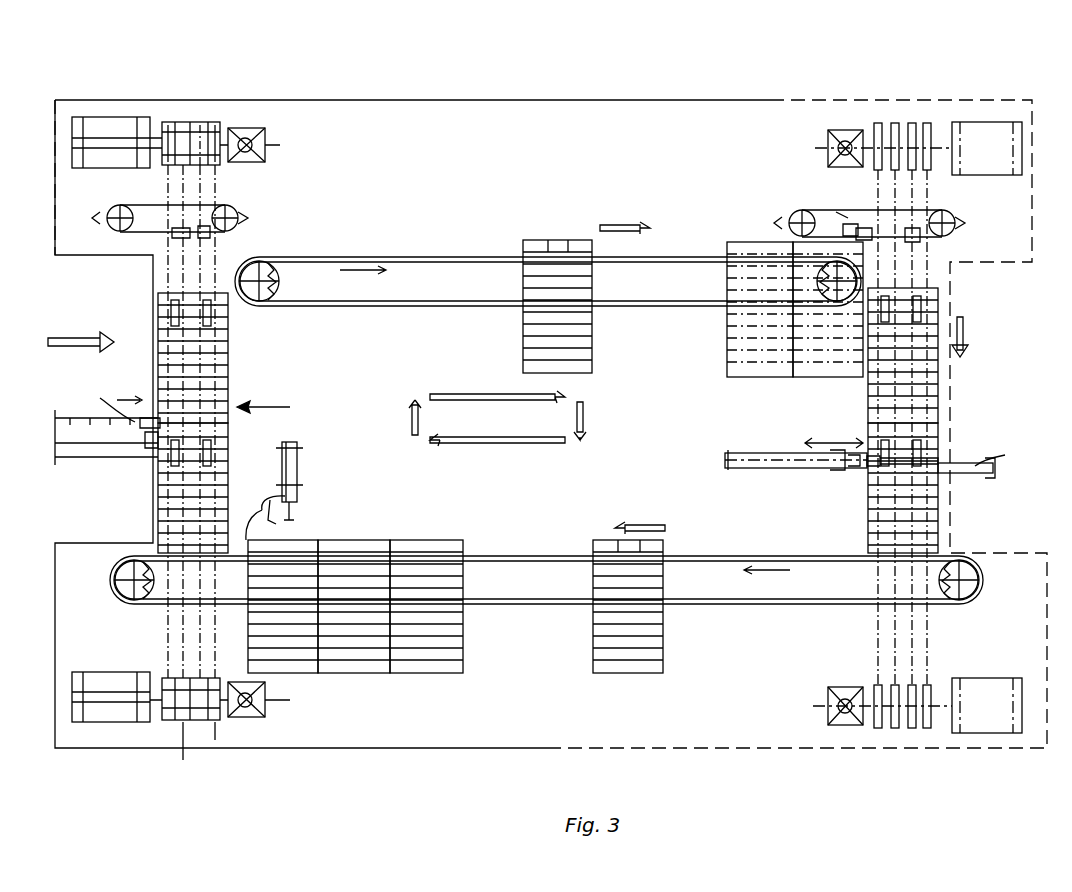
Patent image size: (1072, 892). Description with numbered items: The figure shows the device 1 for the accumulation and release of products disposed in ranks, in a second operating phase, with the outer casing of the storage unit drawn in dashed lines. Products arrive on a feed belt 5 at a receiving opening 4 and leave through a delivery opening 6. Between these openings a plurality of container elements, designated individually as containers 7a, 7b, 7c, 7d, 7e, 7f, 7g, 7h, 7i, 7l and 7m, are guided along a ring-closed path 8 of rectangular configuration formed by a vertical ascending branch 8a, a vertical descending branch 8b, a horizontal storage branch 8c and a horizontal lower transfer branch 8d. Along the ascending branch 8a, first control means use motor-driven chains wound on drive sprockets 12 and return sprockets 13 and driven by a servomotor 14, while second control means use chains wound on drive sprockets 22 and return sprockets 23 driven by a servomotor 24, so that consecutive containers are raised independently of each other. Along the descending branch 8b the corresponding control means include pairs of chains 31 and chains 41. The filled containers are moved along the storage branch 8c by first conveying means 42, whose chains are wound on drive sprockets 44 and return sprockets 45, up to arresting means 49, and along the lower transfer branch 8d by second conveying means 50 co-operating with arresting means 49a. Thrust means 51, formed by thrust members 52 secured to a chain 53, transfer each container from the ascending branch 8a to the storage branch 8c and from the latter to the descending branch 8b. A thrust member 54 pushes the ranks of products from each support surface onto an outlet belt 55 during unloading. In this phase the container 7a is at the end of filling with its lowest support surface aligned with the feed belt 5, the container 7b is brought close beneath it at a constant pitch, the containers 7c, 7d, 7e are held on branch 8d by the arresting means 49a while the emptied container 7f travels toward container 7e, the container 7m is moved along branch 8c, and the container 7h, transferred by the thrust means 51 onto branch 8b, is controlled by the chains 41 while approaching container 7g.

The device for the accumulation and release of products 1 is at (658, 82).
The receiving opening 4 is at (150, 418).
The feed belt 5 is at (103, 428).
The delivery opening 6 is at (938, 462).
The container element 7a is at (232, 350).
The container element 7b is at (226, 468).
The container element 7c is at (283, 673).
The container element 7d is at (358, 673).
The container element 7e is at (427, 673).
The container element 7f is at (637, 673).
The container element 7g is at (935, 512).
The container element 7h is at (938, 378).
The container element 7i is at (820, 377).
The container element 7l is at (752, 377).
The container element 7m is at (592, 353).
The path 8 is at (422, 380).
The ascending branch 8a is at (451, 378).
The descending branch 8b is at (960, 408).
The storage branch 8c is at (477, 240).
The lower transfer branch 8d is at (538, 615).
The drive sprockets 12 is at (215, 124).
The return sprockets 13 is at (183, 725).
The servomotor 14 is at (90, 118).
The drive sprockets 22 is at (168, 722).
The return sprockets 23 is at (168, 122).
The servomotor 24 is at (120, 722).
The chains 31 is at (880, 650).
The chains 41 is at (980, 662).
The first conveying means 42 is at (200, 122).
The drive sprockets 44 is at (810, 290).
The return sprockets 45 is at (283, 284).
The arresting means 49 is at (862, 228).
The arresting means 49a is at (298, 497).
The second conveying means 50 is at (725, 610).
The thrust means 51 is at (241, 212).
The thrust members 52 is at (160, 238).
The chain 53 is at (200, 238).
The thrust member 54 is at (805, 468).
The outlet belt 55 is at (975, 473).